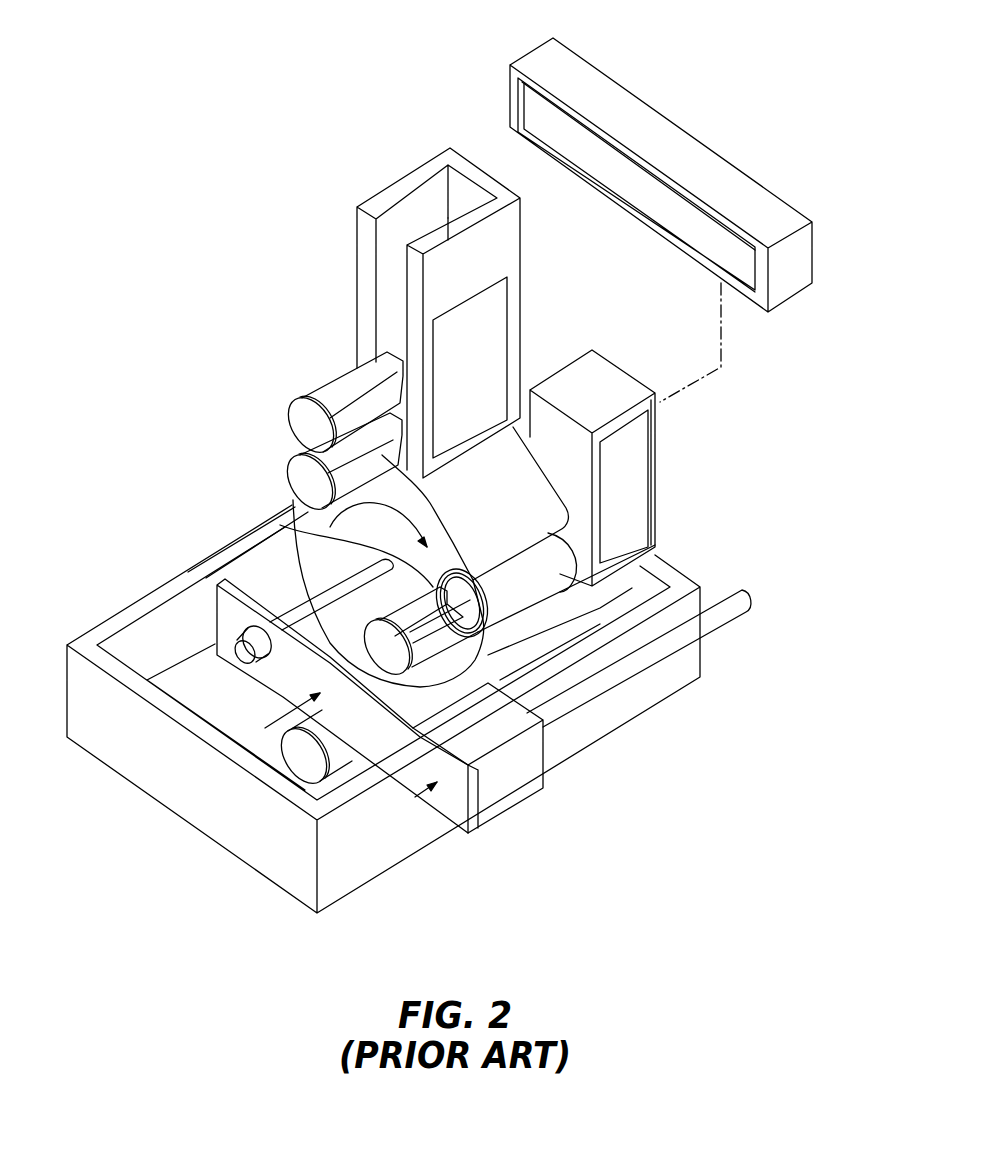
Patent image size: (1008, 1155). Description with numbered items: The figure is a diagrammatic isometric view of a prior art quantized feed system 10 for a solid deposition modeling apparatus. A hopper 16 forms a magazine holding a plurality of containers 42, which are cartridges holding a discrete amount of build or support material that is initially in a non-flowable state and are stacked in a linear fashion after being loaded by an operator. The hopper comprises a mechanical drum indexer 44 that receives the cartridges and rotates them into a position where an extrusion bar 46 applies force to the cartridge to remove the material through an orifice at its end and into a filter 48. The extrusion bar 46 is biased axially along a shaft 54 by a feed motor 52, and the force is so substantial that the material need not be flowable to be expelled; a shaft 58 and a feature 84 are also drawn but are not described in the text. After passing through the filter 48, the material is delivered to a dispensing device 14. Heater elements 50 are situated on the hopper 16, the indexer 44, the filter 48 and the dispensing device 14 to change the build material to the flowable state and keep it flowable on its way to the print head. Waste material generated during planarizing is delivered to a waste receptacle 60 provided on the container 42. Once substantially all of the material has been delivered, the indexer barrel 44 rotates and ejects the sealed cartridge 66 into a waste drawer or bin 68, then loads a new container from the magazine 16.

The quantized feed system 10 is at (218, 215).
The dispensing device 14 is at (584, 72).
The hopper 16 is at (356, 242).
The containers 42 is at (402, 358).
The mechanical drum indexer 44 is at (297, 533).
The extrusion bar 46 is at (456, 802).
The filter 48 is at (604, 373).
The heater elements 50 is at (497, 336).
The feed motor 52 is at (508, 785).
The shaft 54 is at (718, 617).
The shaft 58 is at (378, 571).
The waste receptacle 60 is at (310, 537).
The sealed cartridge 66 is at (335, 755).
The waste drawer or bin 68 is at (132, 758).
The inner wall 84 is at (397, 270).